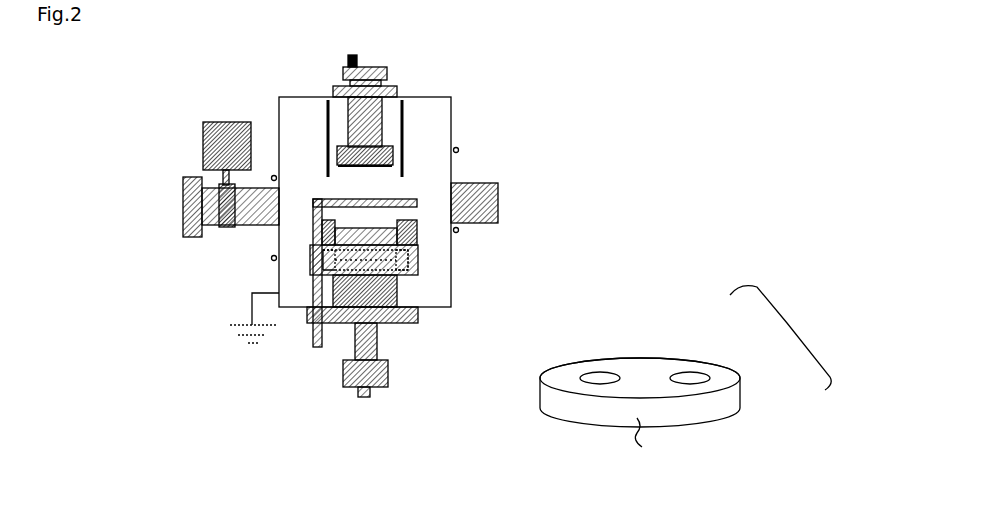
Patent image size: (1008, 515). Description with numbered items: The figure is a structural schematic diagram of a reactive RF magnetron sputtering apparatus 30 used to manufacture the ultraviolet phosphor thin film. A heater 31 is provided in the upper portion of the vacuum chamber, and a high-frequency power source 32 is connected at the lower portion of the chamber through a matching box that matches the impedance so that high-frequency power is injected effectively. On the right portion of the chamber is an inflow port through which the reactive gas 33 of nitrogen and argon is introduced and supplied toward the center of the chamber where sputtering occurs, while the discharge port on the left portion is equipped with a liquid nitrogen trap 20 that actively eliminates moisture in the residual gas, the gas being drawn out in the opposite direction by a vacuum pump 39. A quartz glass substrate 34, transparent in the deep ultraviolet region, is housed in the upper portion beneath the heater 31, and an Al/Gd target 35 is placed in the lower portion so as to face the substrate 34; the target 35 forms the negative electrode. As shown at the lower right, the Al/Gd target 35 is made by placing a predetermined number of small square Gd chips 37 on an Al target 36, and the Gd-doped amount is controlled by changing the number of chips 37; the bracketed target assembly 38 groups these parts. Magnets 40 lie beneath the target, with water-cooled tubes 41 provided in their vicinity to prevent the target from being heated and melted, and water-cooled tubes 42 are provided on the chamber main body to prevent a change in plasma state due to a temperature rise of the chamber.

The liquid nitrogen trap 20 is at (203, 150).
The reactive RF magnetron sputtering apparatus 30 is at (451, 120).
The heater 31 is at (336, 155).
The high-frequency power source 32 is at (365, 403).
The reactive gas 33 is at (503, 202).
The quartz glass substrate 34 is at (367, 171).
The Al/Gd target 35 is at (391, 237).
The Al target 36 is at (702, 405).
The Gd chips 37 is at (649, 358).
The target assembly 38 is at (787, 323).
The vacuum pump 39 is at (180, 205).
The magnets 40 is at (324, 257).
The water-cooled tubes 41 is at (405, 278).
The water-cooled tubes 42 is at (278, 110).